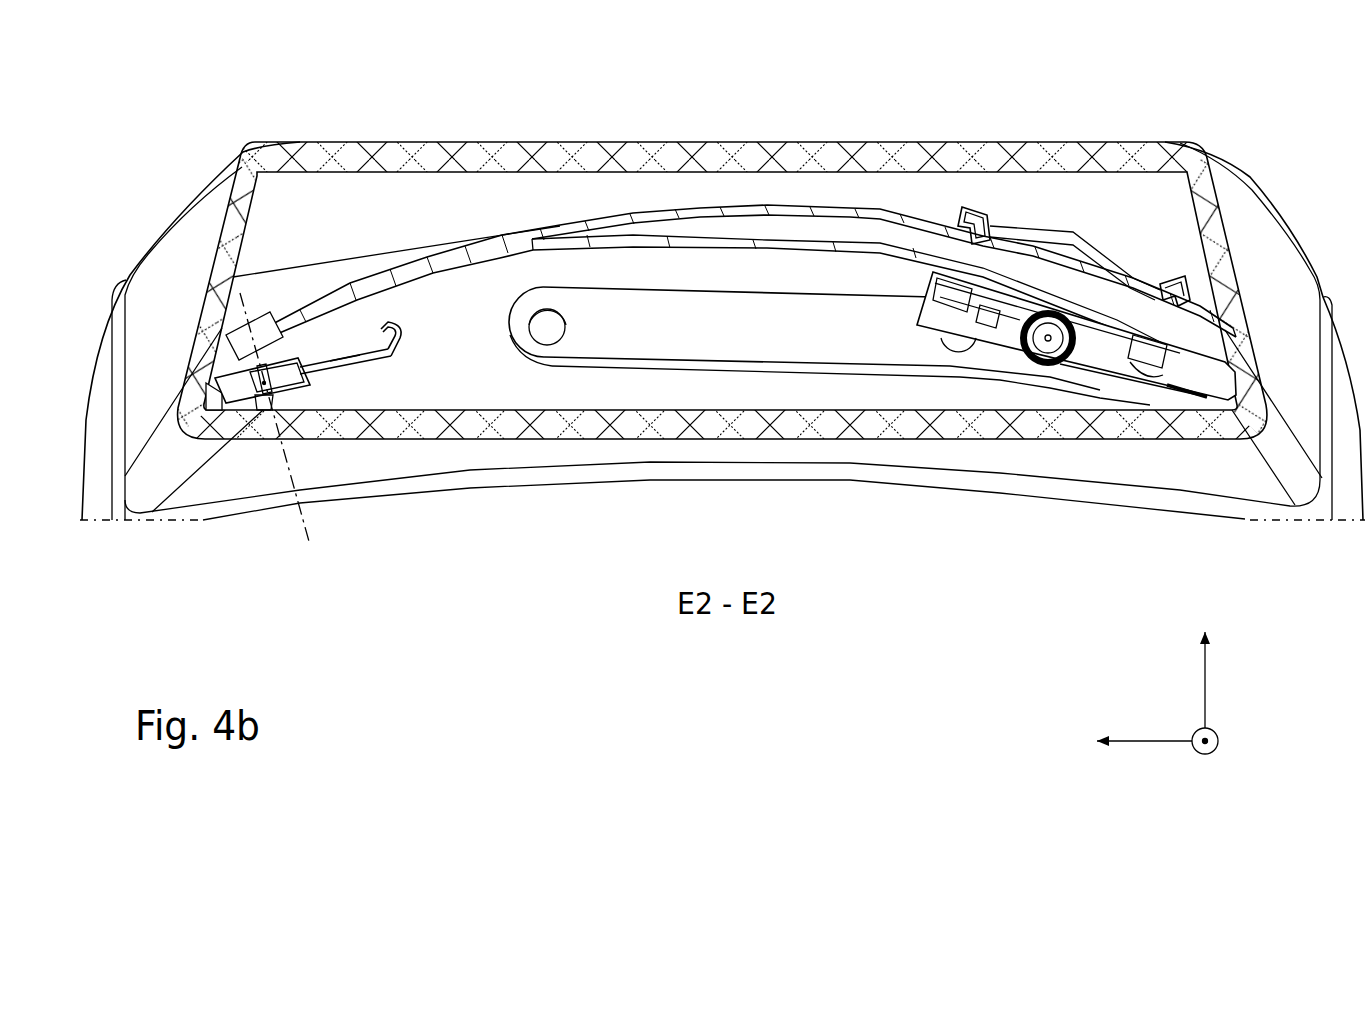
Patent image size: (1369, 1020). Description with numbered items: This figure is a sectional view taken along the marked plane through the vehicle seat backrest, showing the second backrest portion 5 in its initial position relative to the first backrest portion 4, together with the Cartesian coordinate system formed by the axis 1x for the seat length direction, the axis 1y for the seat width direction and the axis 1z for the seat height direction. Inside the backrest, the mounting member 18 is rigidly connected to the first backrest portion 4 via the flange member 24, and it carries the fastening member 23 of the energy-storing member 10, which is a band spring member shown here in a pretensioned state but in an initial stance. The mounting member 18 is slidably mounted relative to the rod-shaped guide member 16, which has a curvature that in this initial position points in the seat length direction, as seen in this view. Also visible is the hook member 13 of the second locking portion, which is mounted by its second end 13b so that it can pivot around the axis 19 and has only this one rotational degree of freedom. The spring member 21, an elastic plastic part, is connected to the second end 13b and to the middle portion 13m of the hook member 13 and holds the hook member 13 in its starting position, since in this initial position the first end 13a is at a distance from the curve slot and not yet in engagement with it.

The first backrest portion 4 is at (84, 359).
The second backrest portion 5 is at (204, 177).
The energy-storing member 10 is at (1103, 371).
The hook member 13 is at (325, 436).
The first end of the hook member 13a is at (390, 336).
The middle portion of the hook member 13m is at (351, 366).
The second end of the hook member 13b is at (258, 402).
The guide member 16 is at (755, 221).
The mounting member 18 is at (1043, 231).
The axis 19 is at (316, 541).
The spring member 21 is at (307, 371).
The fastening member 23 is at (1040, 346).
The flange member 24 is at (686, 342).
The axis 1x is at (1207, 690).
The axis 1y is at (1143, 742).
The axis 1z is at (1205, 754).